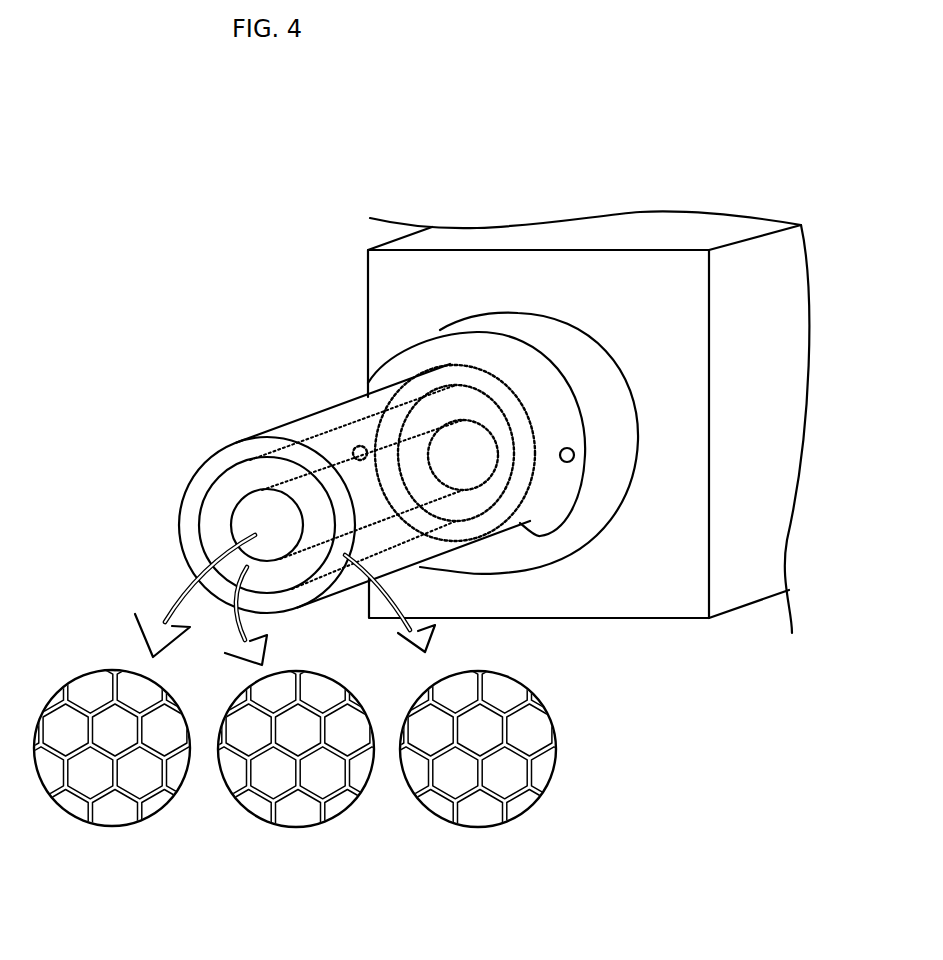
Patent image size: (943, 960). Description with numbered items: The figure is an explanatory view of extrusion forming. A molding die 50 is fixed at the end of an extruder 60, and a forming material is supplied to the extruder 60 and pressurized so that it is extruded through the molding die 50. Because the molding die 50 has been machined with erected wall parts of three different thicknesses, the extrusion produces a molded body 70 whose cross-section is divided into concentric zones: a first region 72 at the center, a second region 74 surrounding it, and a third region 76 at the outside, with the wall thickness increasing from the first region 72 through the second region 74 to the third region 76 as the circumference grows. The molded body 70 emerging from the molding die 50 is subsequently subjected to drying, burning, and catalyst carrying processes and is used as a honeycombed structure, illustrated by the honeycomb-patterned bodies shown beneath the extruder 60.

The molding die 50 is at (356, 360).
The extruder 60 is at (622, 157).
The molded body 70 is at (320, 488).
The first region 72 is at (265, 507).
The second region 74 is at (225, 498).
The third region 76 is at (193, 517).